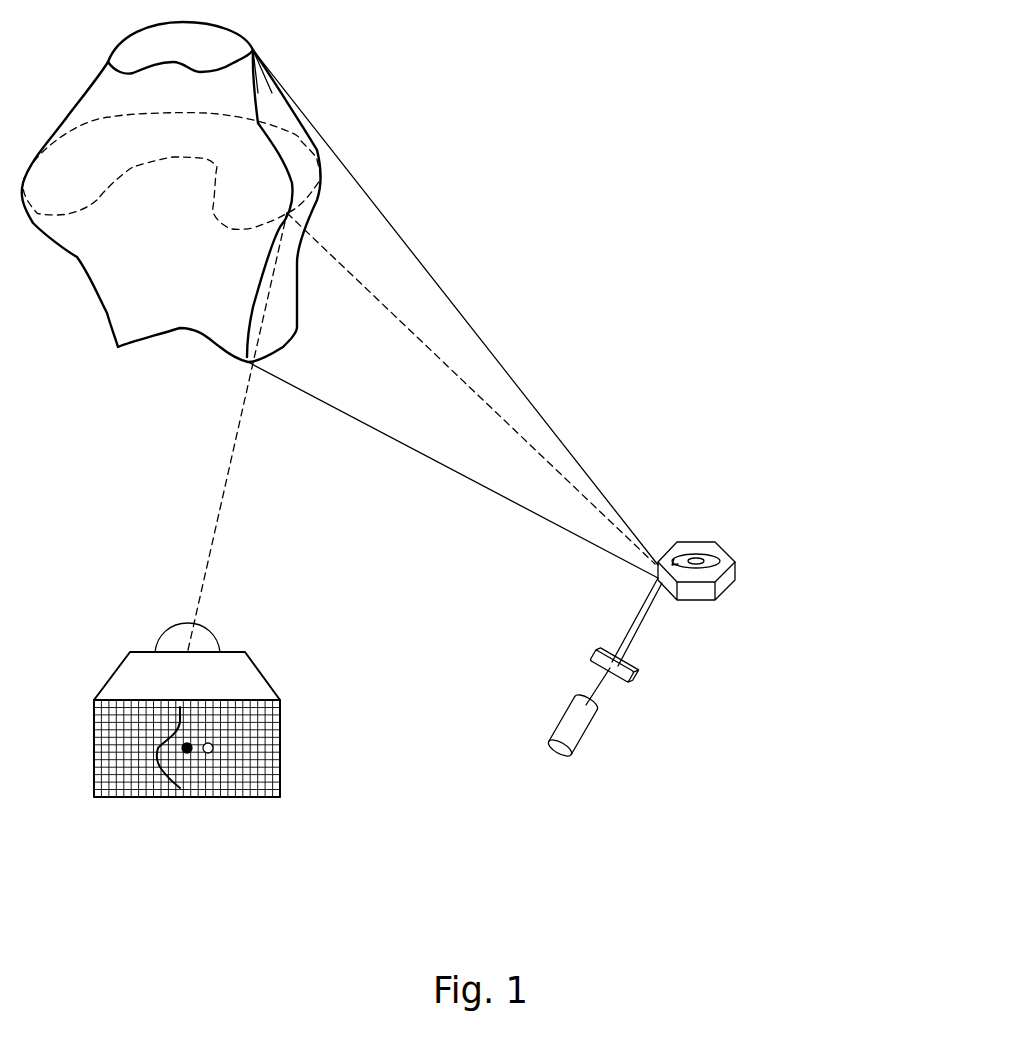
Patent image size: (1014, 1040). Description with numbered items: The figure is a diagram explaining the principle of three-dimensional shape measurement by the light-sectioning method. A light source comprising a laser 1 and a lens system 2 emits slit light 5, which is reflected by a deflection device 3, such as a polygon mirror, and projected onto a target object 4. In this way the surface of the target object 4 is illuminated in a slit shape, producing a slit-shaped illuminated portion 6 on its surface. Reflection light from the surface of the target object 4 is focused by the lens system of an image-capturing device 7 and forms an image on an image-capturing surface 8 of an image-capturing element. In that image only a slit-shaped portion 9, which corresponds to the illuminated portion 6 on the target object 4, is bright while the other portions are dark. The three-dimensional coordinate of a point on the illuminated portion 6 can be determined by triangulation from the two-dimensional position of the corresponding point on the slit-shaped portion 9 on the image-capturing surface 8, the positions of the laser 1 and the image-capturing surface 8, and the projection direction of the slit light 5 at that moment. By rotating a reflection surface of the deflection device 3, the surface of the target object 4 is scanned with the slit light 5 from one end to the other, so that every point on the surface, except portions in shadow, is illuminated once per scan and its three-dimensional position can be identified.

The laser 1 is at (590, 737).
The lens system 2 is at (625, 688).
The deflection device 3 is at (727, 586).
The target object 4 is at (170, 214).
The slit light 5 is at (453, 314).
The slit-shaped illuminated portion 6 is at (258, 100).
The image-capturing device 7 is at (257, 662).
The image-capturing surface 8 is at (272, 740).
The slit-shaped portion 9 is at (162, 777).